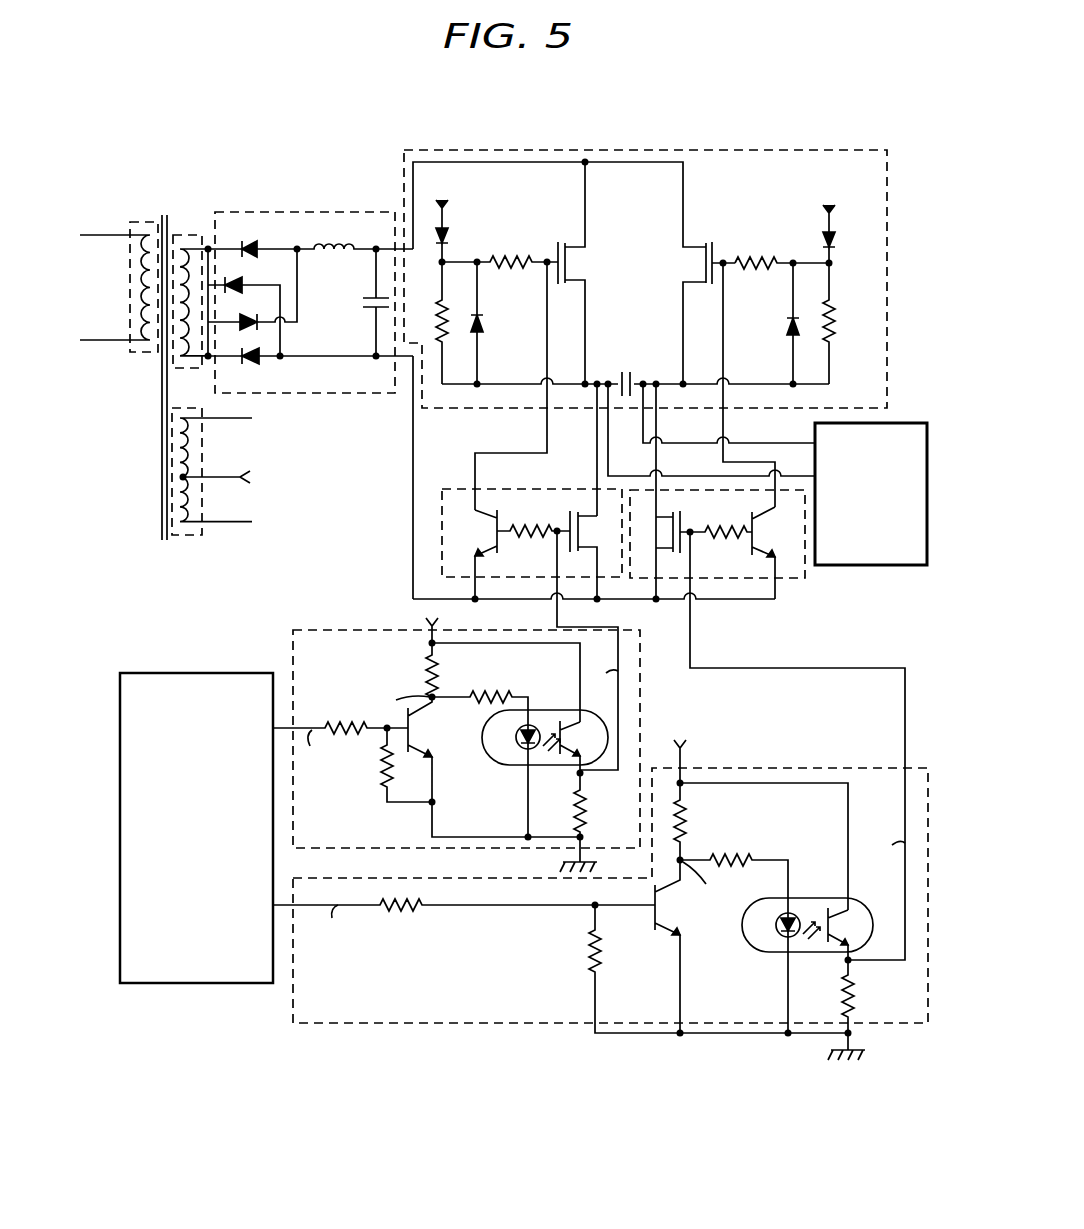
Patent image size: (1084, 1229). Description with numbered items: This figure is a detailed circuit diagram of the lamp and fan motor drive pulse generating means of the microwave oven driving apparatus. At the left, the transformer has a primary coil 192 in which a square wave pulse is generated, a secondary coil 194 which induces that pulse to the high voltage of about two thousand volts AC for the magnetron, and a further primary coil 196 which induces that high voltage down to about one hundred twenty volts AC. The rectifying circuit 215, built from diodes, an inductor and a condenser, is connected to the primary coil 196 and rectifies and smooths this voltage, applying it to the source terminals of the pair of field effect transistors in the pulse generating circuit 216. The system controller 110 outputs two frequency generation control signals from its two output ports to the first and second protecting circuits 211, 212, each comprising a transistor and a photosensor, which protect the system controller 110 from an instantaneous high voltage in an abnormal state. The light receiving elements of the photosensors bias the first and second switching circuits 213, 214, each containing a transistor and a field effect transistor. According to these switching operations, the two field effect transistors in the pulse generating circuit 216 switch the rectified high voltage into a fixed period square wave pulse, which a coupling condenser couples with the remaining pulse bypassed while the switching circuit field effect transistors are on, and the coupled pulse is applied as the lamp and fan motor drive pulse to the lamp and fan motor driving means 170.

The system controller 110 is at (193, 984).
The lamp and fan motor driving means 170 is at (870, 566).
The primary coil 192 is at (190, 535).
The secondary coil 194 is at (143, 354).
The primary coil 196 is at (192, 233).
The first protecting circuit 211 is at (320, 630).
The second protecting circuit 212 is at (497, 1023).
The first switching circuit 213 is at (445, 489).
The second switching circuit 214 is at (805, 578).
The rectifying circuit 215 is at (350, 212).
The pulse generating circuit 216 is at (631, 150).